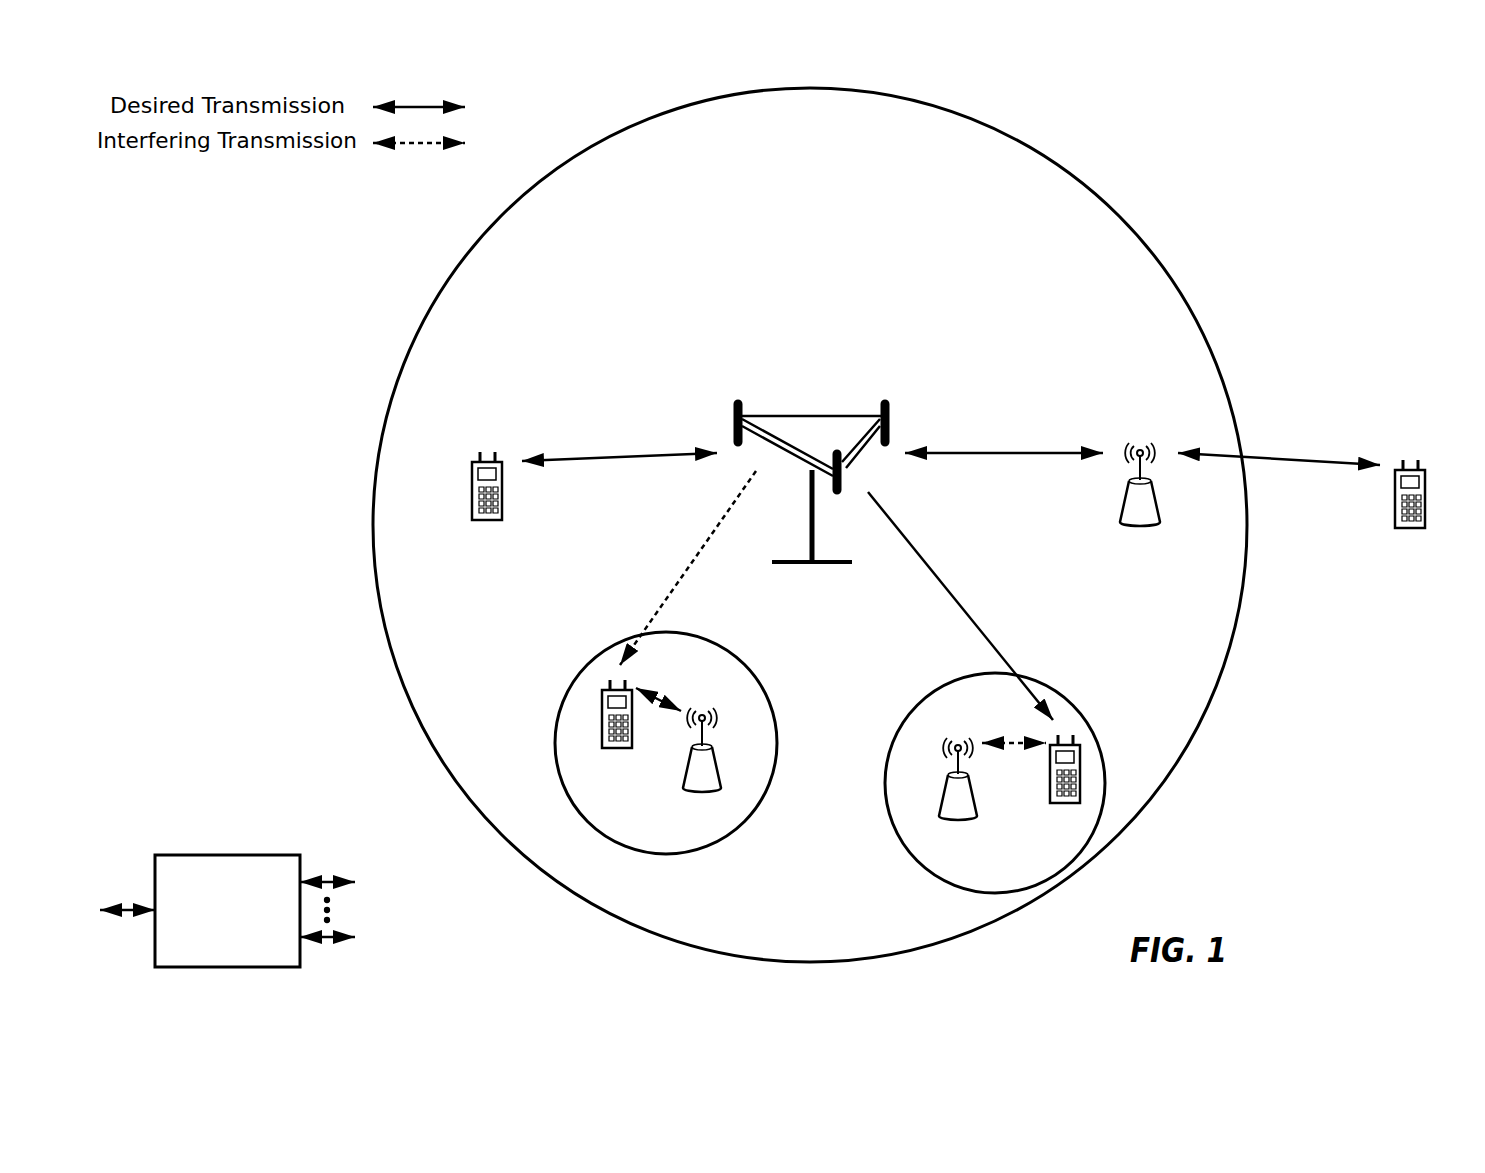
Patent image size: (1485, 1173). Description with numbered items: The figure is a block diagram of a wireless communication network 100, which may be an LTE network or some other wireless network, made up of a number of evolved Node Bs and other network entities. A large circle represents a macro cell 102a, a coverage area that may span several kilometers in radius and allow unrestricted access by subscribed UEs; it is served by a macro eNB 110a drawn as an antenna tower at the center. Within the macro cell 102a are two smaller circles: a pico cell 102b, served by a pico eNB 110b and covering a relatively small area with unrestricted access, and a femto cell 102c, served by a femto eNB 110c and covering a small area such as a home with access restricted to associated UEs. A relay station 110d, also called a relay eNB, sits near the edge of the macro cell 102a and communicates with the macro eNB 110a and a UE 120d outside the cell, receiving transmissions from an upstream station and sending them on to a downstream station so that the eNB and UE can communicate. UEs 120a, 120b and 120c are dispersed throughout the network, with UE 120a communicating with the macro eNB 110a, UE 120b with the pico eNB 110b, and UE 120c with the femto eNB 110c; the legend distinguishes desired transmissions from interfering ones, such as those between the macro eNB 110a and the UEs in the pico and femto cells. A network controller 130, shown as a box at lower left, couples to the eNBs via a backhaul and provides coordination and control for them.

The wireless communication network 100 is at (1330, 155).
The macro cell 102a is at (1101, 194).
The pico cell 102b is at (748, 668).
The femto cell 102c is at (910, 705).
The macro eNB 110a is at (806, 414).
The pico eNB 110b is at (720, 770).
The femto eNB 110c is at (942, 797).
The relay station 110d is at (1141, 449).
The UE 120a is at (473, 470).
The UE 120b is at (602, 740).
The UE 120c is at (1050, 795).
The UE 120d is at (1426, 480).
The network controller 130 is at (222, 854).